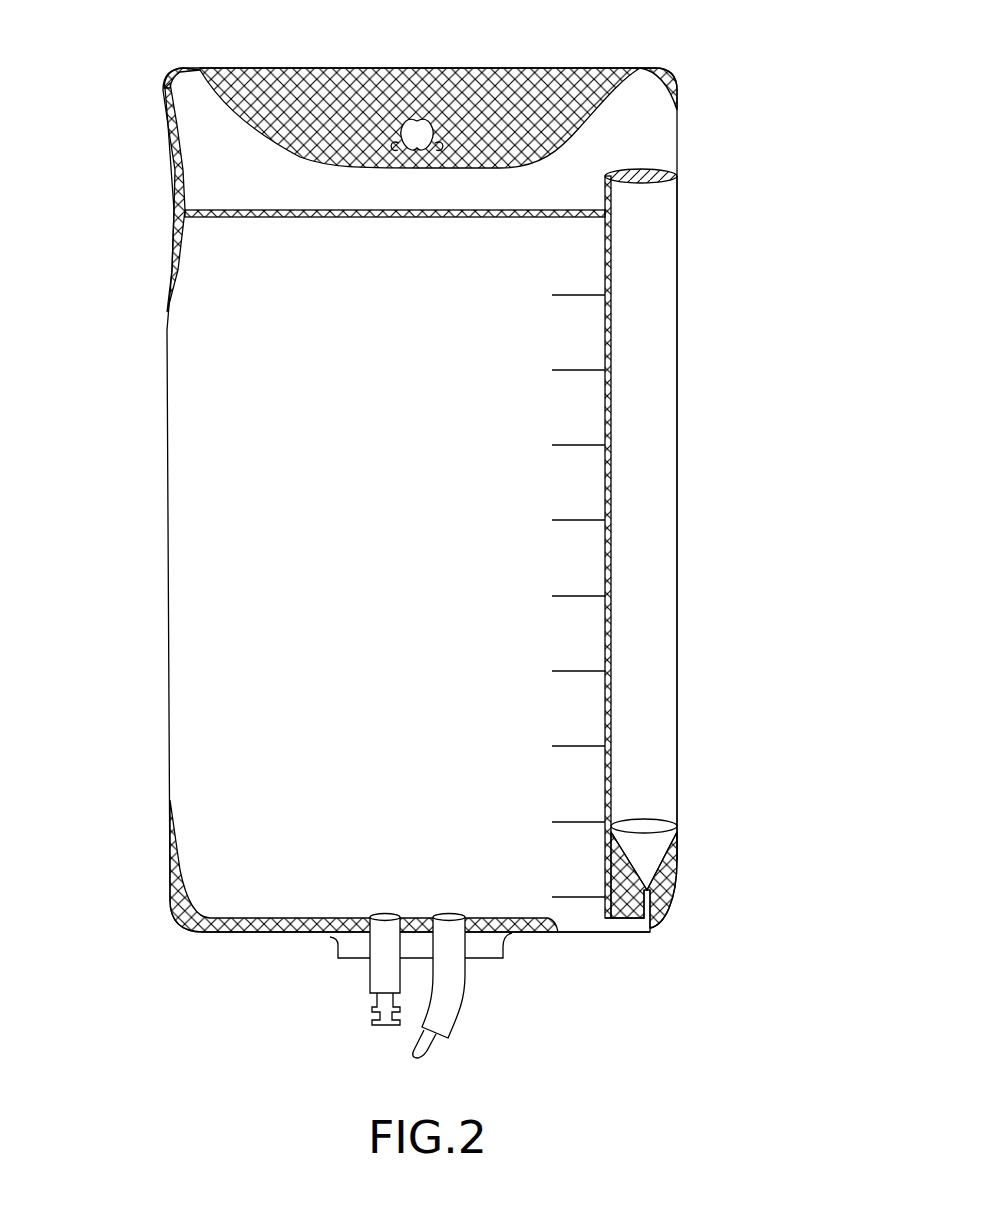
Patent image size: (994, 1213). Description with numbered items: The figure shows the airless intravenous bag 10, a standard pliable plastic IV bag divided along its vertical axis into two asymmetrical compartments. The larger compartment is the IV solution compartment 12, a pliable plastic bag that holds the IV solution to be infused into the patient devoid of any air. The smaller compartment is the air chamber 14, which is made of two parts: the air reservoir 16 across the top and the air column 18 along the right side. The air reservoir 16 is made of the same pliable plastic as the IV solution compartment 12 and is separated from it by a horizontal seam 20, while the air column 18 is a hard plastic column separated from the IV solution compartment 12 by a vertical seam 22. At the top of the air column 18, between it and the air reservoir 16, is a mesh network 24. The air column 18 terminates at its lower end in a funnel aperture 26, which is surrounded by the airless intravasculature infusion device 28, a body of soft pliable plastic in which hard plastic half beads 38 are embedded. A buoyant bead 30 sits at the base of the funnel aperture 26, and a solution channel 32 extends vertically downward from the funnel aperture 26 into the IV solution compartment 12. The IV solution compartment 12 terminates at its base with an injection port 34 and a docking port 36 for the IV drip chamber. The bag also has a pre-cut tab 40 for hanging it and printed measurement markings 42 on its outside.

The airless intravenous bag 10 is at (776, 482).
The IV solution compartment 12 is at (195, 455).
The air chamber 14 is at (585, 193).
The air reservoir 16 is at (190, 135).
The air column 18 is at (668, 333).
The horizontal seam 20 is at (190, 212).
The vertical seam 22 is at (612, 640).
The mesh network 24 is at (648, 174).
The funnel aperture 26 is at (663, 838).
The airless intravasculature infusion device (AIVID) 28 is at (672, 861).
The buoyant bead 30 is at (657, 888).
The solution channel 32 is at (640, 925).
The injection port 34 is at (378, 978).
The docking port 36 is at (452, 1013).
The hard plastic half beads 38 is at (677, 906).
The pre-cut tab 40 is at (422, 120).
The printed measurement markings 42 is at (520, 445).